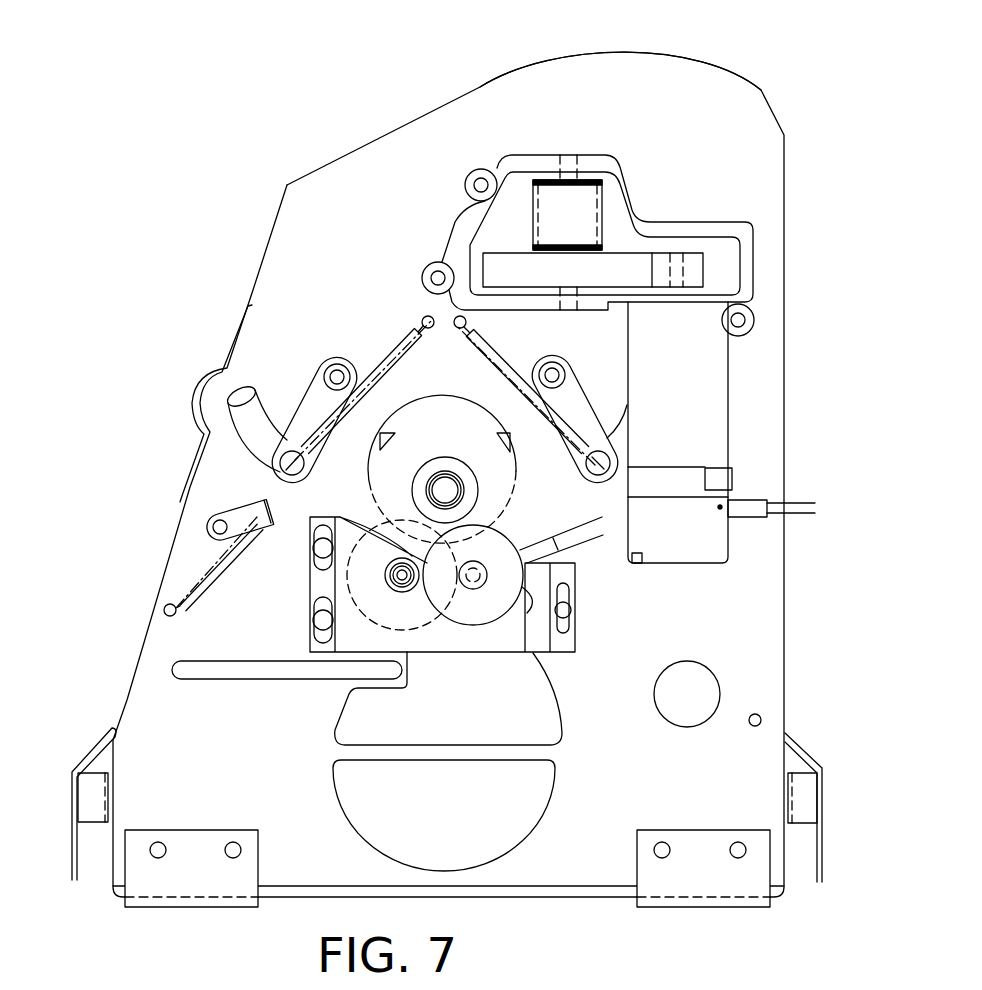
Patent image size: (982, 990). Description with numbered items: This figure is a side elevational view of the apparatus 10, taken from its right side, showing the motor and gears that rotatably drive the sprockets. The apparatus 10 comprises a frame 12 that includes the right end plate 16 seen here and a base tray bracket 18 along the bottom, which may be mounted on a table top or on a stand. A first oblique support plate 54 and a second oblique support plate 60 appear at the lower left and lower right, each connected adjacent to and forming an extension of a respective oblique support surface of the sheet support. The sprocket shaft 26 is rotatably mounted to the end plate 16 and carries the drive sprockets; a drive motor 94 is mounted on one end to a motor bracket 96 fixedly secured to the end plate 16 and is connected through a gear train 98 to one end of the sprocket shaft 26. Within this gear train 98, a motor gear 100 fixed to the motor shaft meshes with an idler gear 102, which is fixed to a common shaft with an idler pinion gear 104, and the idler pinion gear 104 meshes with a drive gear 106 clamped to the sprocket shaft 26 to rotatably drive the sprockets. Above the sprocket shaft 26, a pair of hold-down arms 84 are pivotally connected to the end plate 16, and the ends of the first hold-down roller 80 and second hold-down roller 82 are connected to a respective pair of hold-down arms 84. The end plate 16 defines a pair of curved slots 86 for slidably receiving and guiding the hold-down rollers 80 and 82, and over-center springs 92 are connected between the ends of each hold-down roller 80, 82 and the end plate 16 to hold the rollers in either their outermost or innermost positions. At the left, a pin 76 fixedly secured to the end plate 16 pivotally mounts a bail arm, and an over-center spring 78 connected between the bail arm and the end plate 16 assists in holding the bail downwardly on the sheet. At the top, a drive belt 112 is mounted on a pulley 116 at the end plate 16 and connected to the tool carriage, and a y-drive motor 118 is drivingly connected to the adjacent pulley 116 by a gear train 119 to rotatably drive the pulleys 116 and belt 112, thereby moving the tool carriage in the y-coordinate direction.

The apparatus 10 is at (313, 125).
The frame 12 is at (438, 76).
The right end plate 16 is at (546, 62).
The base tray bracket 18 is at (490, 900).
The sprocket shaft 26 is at (440, 482).
The first oblique support plate 54 is at (98, 742).
The second oblique support plate 60 is at (807, 750).
The pin 76 is at (217, 528).
The over-center springs 78 is at (238, 555).
The first hold-down roller 80 is at (277, 467).
The second hold-down roller 82 is at (610, 462).
The hold-down arms 84 is at (312, 403).
The curved slots 86 is at (263, 383).
The over-center springs 92 is at (497, 374).
The drive motor 94 is at (527, 613).
The motor bracket 96 is at (533, 652).
The gear train 98 is at (551, 561).
The motor gear 100 is at (473, 590).
The idler gear 102 is at (415, 627).
The idler pinion gear 104 is at (383, 562).
The drive gear 106 is at (520, 467).
The drive belt 112 is at (530, 223).
The pulley 116 is at (598, 173).
The y-drive motor 118 is at (683, 567).
The gear train 119 is at (666, 237).